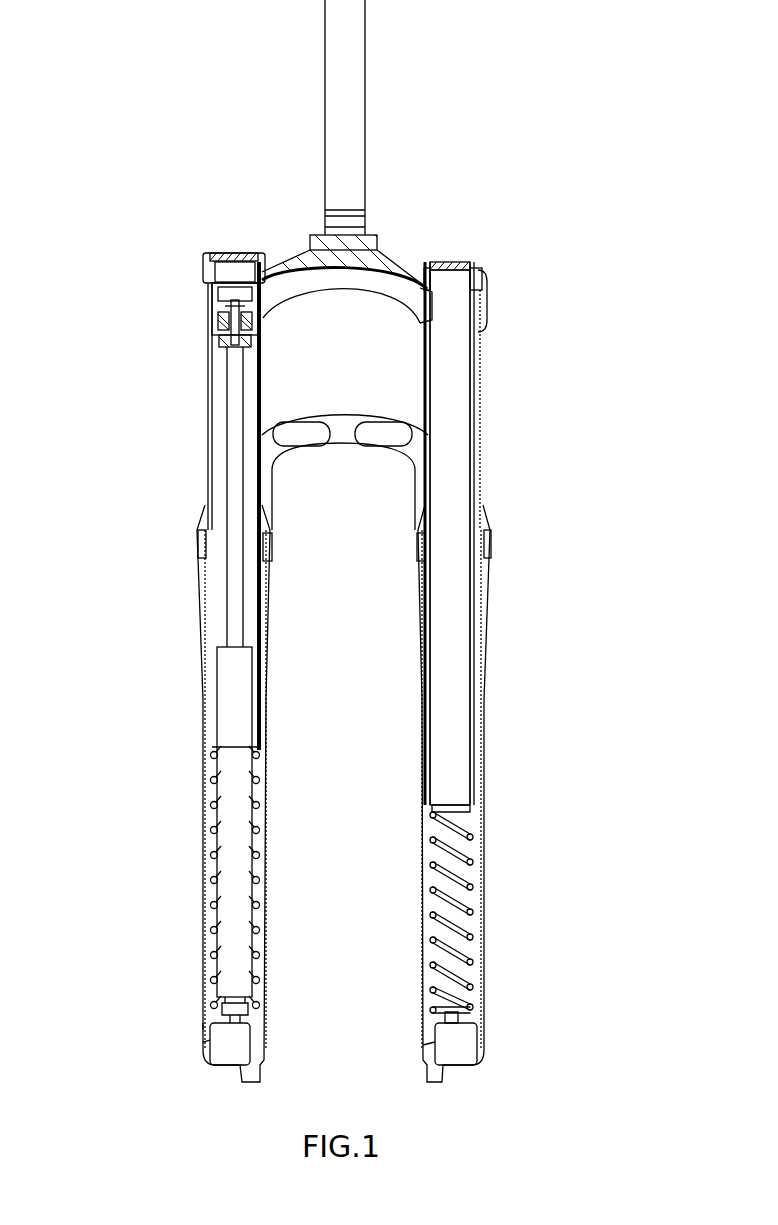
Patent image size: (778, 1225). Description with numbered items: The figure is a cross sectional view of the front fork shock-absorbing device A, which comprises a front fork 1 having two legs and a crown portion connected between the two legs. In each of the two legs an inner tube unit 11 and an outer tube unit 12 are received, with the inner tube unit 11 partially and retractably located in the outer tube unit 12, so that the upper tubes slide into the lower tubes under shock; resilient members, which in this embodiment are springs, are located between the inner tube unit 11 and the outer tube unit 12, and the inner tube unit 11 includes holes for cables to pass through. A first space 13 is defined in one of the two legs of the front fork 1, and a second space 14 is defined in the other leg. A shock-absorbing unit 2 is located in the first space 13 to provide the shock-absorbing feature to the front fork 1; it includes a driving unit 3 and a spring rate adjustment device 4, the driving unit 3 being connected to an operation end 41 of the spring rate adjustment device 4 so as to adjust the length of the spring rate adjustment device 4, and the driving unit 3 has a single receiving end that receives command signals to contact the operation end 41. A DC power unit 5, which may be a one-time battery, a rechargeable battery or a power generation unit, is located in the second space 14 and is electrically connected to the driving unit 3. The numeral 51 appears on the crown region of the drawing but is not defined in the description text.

The front fork shock-absorbing device A is at (148, 96).
The front fork 1 is at (428, 541).
The inner tube unit 11 is at (484, 454).
The outer tube unit 12 is at (398, 793).
The first space 13 is at (212, 842).
The second space 14 is at (470, 840).
The shock-absorbing unit 2 is at (211, 623).
The driving unit 3 is at (205, 343).
The spring rate adjustment device 4 is at (204, 672).
The operation end 41 is at (264, 362).
The DC power unit 5 is at (462, 548).
The crown arch 51 is at (383, 272).